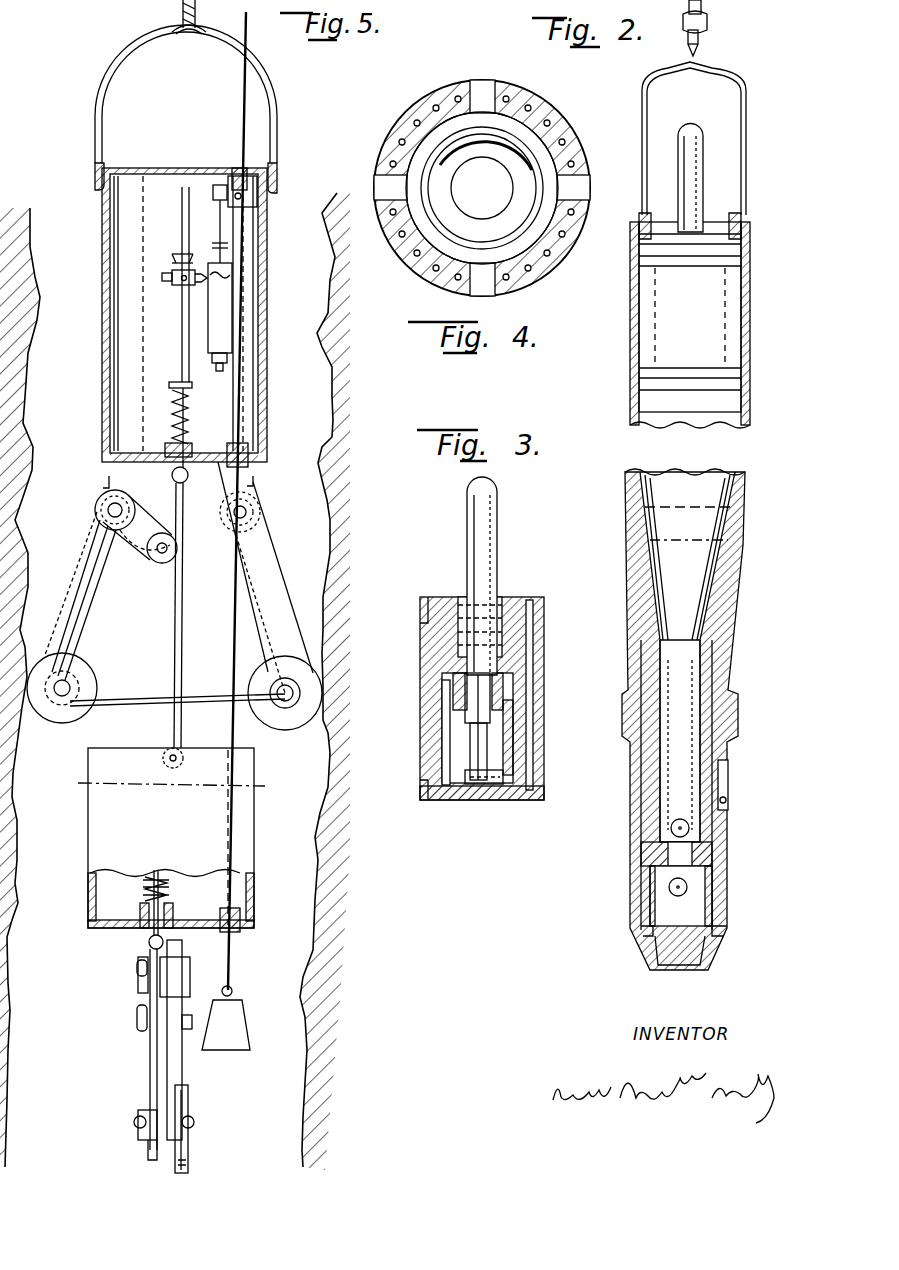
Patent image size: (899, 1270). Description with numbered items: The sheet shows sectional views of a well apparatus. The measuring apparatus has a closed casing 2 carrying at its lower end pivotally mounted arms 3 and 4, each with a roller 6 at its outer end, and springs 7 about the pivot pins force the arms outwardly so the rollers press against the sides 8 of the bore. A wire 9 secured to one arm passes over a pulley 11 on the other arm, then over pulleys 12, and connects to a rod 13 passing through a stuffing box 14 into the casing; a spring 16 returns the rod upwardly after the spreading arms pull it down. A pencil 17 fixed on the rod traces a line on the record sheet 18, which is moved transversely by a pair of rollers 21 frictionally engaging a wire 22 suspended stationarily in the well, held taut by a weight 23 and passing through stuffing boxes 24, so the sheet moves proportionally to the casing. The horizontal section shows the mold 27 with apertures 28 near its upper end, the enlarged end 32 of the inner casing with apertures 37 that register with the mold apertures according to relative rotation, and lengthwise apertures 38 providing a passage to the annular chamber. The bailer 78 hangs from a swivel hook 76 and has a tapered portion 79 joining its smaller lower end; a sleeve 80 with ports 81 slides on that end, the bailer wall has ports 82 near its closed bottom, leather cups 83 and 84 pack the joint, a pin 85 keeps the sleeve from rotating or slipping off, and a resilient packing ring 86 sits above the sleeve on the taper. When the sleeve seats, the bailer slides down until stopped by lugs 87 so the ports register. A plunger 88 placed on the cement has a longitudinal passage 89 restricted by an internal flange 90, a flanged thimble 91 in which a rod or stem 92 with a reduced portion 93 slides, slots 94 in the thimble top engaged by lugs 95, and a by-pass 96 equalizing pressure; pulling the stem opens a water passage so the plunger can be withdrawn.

In FIG. 5, the closed casing 2 is at (267, 350).
In FIG. 5, the arm 3 is at (98, 626).
In FIG. 5, the arm 4 is at (273, 600).
In FIG. 5, the roller 6 is at (76, 720).
In FIG. 5, the spring 7 is at (100, 498).
In FIG. 5, the sides of the bore 8 is at (16, 762).
In FIG. 5, the wire 9 is at (160, 704).
In FIG. 5, the pulley 11 is at (72, 688).
In FIG. 5, the pulleys 12 is at (160, 566).
In FIG. 5, the rod 13 is at (182, 362).
In FIG. 5, the stuffing box 14 is at (190, 466).
In FIG. 5, the spring 16 is at (198, 420).
In FIG. 5, the pencil 17 is at (168, 283).
In FIG. 5, the record sheet 18 is at (222, 298).
In FIG. 5, the rollers 21 is at (259, 206).
In FIG. 5, the wire 22 is at (250, 250).
In FIG. 5, the weight 23 is at (228, 1038).
In FIG. 5, the stuffing boxes 24 is at (238, 175).
In FIG. 4, the mold 27 is at (418, 104).
In FIG. 4, the apertures 28 is at (565, 185).
In FIG. 4, the enlarged end 32 is at (548, 245).
In FIG. 4, the apertures 37 is at (540, 193).
In FIG. 4, the apertures 38 is at (548, 110).
In FIG. 2, the swivel hook 76 is at (704, 34).
In FIG. 2, the bailer 78 is at (632, 340).
In FIG. 2, the tapered portion 79 is at (645, 572).
In FIG. 2, the sleeve 80 is at (635, 780).
In FIG. 2, the ports 81 is at (641, 900).
In FIG. 2, the ports 82 is at (640, 826).
In FIG. 2, the leather cup 83 is at (640, 720).
In FIG. 2, the leather cup 84 is at (641, 862).
In FIG. 2, the pin 85 is at (728, 798).
In FIG. 2, the resilient packing ring 86 is at (736, 612).
In FIG. 2, the lugs 87 is at (727, 922).
In FIG. 3, the plunger 88 is at (432, 632).
In FIG. 2, the plunger 88 is at (702, 286).
In FIG. 3, the passage 89 is at (541, 632).
In FIG. 3, the internal flange 90 is at (532, 665).
In FIG. 3, the flanged thimble 91 is at (426, 794).
In FIG. 3, the rod or stem 92 is at (478, 530).
In FIG. 2, the rod or stem 92 is at (693, 136).
In FIG. 3, the reduced portion 93 is at (512, 703).
In FIG. 3, the slots 94 is at (455, 700).
In FIG. 3, the lugs 95 is at (452, 716).
In FIG. 3, the by-pass 96 is at (520, 745).